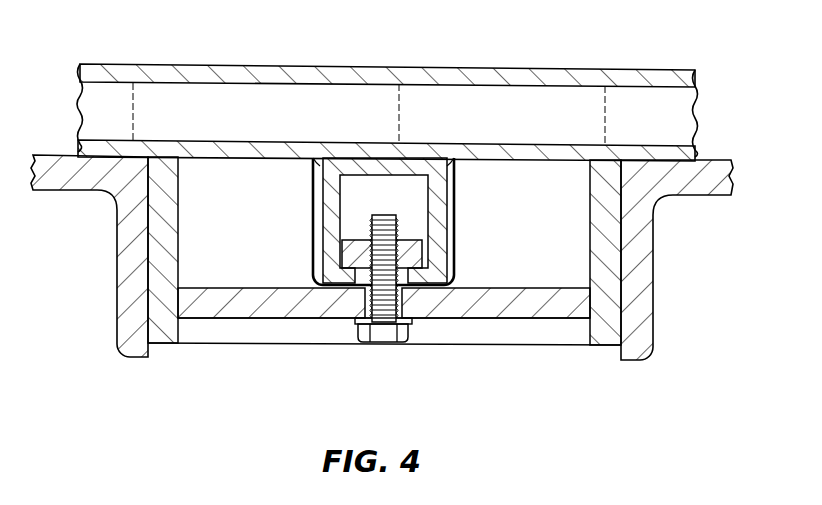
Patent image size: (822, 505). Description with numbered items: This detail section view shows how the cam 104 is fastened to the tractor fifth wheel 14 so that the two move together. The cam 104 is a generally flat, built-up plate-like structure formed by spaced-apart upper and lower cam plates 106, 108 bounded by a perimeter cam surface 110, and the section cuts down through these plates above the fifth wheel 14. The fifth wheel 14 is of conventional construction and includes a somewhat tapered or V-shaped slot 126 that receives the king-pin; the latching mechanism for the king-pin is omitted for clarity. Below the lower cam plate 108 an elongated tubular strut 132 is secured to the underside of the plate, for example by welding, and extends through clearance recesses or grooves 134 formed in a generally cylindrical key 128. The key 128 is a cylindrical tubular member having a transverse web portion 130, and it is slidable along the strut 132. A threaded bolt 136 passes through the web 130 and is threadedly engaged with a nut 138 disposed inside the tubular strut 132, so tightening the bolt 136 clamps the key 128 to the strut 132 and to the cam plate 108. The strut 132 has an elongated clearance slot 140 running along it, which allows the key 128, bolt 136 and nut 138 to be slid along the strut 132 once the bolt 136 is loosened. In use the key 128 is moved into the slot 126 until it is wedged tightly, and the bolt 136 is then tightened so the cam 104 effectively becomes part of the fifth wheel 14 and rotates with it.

The tractor fifth wheel 14 is at (382, 266).
The cam 104 is at (434, 101).
The upper cam plate 106 is at (522, 66).
The lower cam plate 108 is at (695, 152).
The perimeter cam surface 110 is at (695, 120).
The slot 126 is at (156, 222).
The key 128 is at (152, 296).
The web portion 130 is at (267, 322).
The tubular strut 132 is at (447, 205).
The clearance recesses or grooves 134 is at (315, 212).
The threaded bolt 136 is at (402, 303).
The nut 138 is at (421, 257).
The clearance slot 140 is at (360, 285).